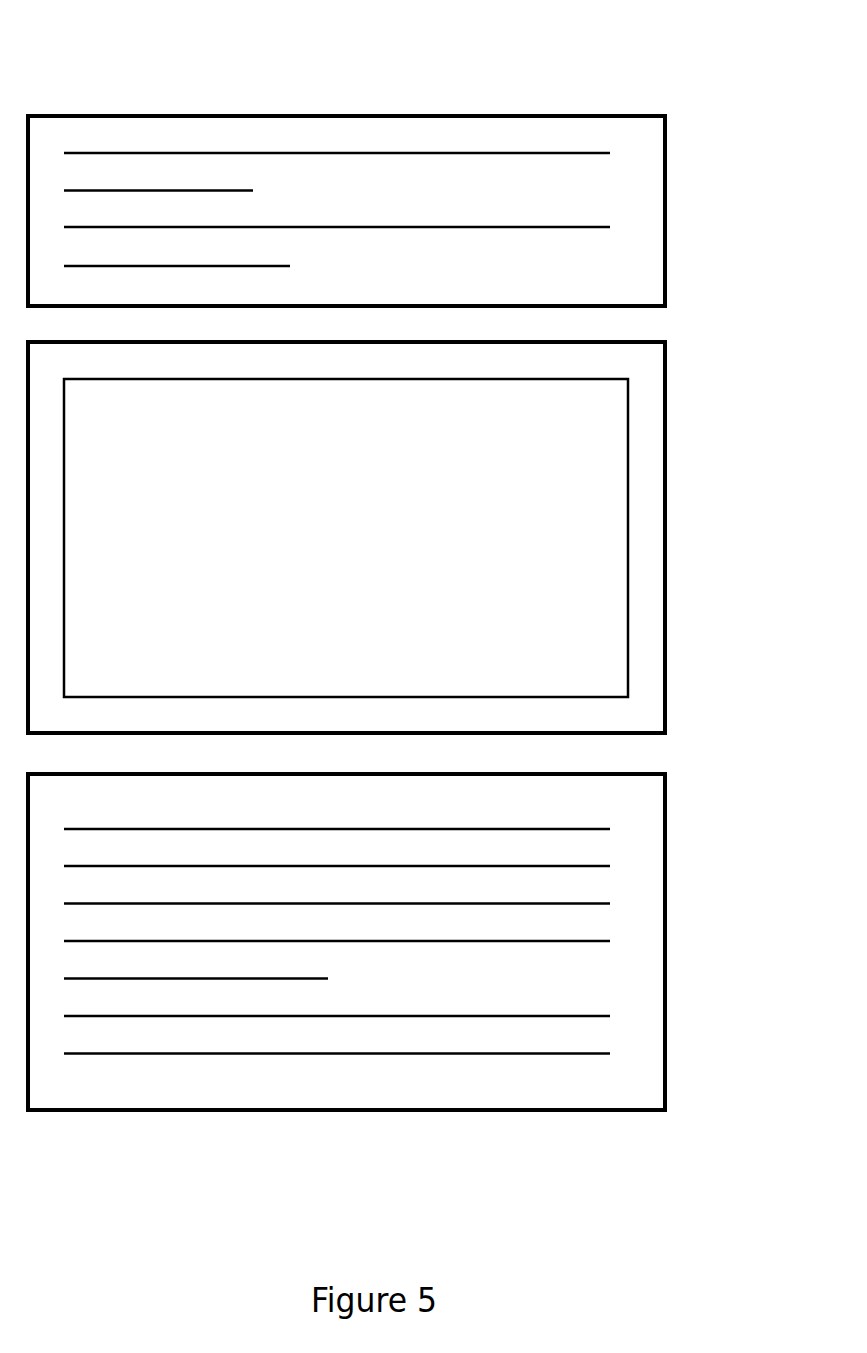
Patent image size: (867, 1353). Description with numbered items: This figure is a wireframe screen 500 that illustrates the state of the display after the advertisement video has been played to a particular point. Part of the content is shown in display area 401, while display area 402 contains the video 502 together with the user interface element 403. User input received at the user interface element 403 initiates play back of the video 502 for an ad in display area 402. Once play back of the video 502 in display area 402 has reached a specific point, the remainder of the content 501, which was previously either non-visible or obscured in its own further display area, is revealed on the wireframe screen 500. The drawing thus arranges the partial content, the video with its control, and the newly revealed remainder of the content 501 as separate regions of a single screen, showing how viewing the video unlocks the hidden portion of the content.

The wireframe screen 500 is at (537, 80).
The display area 401 is at (666, 206).
The display area 402 is at (397, 537).
The video 502 is at (628, 562).
The user interface element 403 is at (397, 942).
The remainder of the content 501 is at (608, 1017).